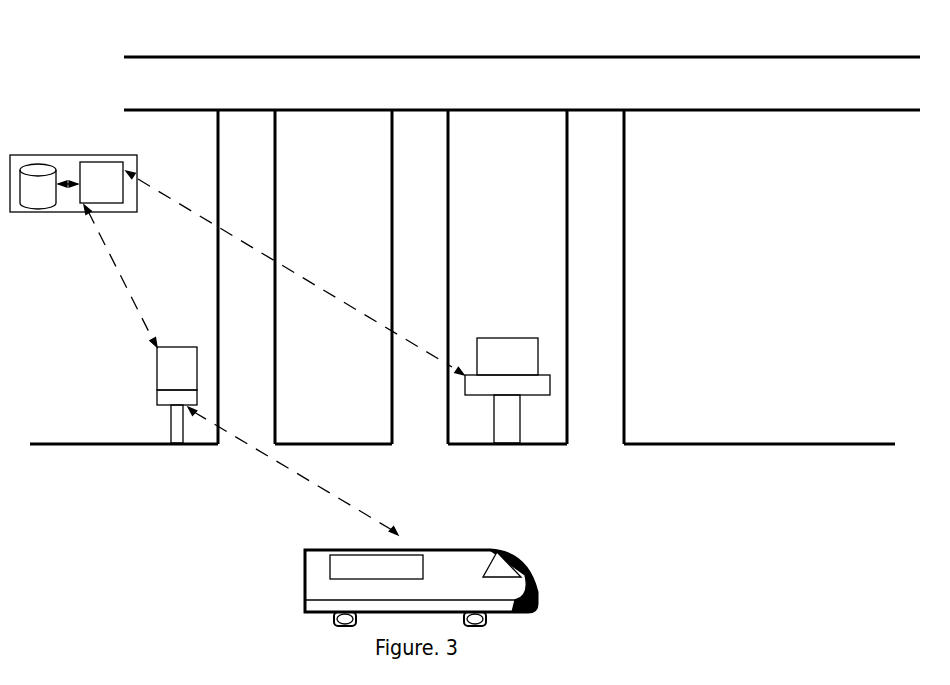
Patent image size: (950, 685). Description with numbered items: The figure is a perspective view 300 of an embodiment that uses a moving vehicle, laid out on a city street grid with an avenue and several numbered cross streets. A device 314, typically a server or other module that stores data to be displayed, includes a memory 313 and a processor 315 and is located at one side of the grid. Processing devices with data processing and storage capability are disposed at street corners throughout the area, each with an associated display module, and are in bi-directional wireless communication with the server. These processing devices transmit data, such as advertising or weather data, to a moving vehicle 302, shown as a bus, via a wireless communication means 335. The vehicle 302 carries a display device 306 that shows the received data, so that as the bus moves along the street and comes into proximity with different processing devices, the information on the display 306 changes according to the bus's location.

The perspective view 300 is at (857, 30).
The memory 313 is at (38, 186).
The device 314 is at (133, 156).
The processor 315 is at (101, 182).
The communication means 335 is at (368, 513).
The moving vehicle 302 is at (540, 560).
The display device 306 is at (376, 567).